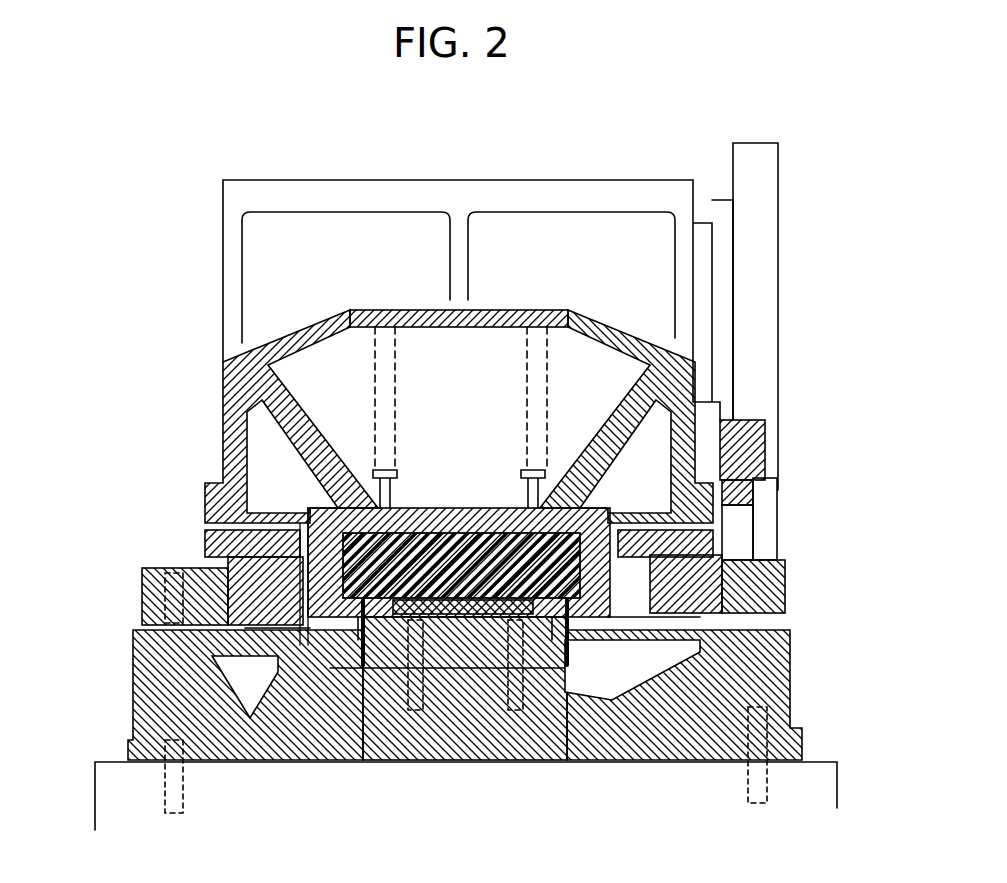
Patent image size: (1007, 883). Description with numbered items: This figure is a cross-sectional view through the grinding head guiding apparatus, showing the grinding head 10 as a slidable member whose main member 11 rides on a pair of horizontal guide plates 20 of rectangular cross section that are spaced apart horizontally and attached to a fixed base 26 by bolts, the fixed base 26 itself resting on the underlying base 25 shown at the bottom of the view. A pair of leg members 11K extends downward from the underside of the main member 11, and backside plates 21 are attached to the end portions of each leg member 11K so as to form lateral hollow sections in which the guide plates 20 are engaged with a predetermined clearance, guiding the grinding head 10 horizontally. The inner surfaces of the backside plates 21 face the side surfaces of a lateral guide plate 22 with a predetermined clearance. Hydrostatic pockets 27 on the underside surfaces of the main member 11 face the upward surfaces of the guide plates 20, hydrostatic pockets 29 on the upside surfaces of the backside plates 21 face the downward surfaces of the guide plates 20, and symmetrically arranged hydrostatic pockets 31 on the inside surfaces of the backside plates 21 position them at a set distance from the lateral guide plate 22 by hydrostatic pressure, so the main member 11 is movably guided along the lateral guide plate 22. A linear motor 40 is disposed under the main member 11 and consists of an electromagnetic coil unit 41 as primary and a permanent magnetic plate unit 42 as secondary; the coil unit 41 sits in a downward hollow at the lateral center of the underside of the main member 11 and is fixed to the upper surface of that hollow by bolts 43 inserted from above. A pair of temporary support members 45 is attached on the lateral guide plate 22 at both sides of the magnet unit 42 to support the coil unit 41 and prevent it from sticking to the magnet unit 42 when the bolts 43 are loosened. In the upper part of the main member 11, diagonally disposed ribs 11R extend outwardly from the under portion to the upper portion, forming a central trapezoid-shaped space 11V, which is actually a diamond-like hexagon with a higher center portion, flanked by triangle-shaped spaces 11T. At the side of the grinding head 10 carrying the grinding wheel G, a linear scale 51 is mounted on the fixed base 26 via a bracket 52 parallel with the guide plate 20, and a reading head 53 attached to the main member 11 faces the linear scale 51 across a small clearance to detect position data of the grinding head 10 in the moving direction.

The grinding head 10 is at (200, 237).
The main member 11 is at (268, 332).
The trapezoid-shaped space 11V is at (467, 352).
The ribs 11R is at (302, 378).
The triangle-shaped spaces 11T is at (250, 440).
The leg members 11K is at (275, 588).
The horizontal guide plates 20 is at (228, 600).
The backside plates 21 is at (285, 660).
The lateral guide plate 22 is at (433, 612).
The base 25 is at (822, 783).
The fixed base 26 is at (700, 733).
The hydrostatic pockets 27 is at (207, 538).
The hydrostatic pockets 29 is at (292, 655).
The hydrostatic pockets 31 is at (353, 660).
The linear motor 40 is at (427, 512).
The electromagnetic coil unit 41 is at (467, 550).
The permanent magnetic plate unit 42 is at (470, 614).
The bolts 43 is at (376, 470).
The temporary support members 45 is at (360, 640).
The linear scale 51 is at (725, 478).
The bracket 52 is at (767, 518).
The reading head 53 is at (722, 424).
The grinding wheel G is at (765, 213).